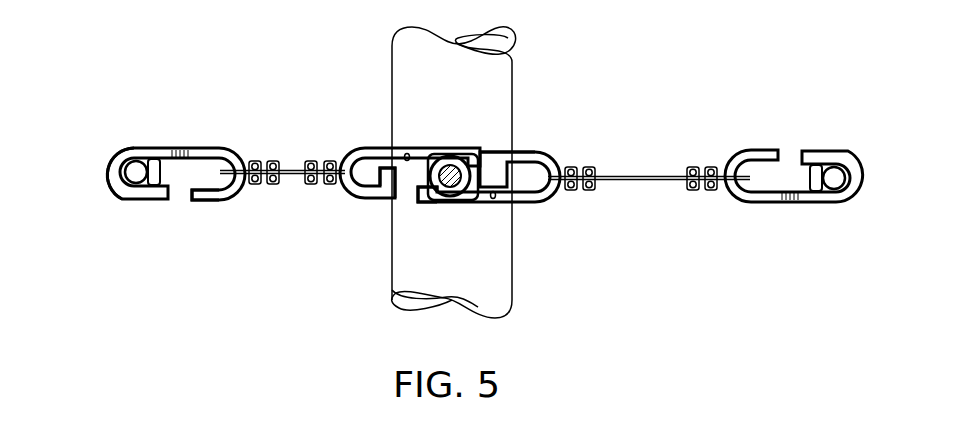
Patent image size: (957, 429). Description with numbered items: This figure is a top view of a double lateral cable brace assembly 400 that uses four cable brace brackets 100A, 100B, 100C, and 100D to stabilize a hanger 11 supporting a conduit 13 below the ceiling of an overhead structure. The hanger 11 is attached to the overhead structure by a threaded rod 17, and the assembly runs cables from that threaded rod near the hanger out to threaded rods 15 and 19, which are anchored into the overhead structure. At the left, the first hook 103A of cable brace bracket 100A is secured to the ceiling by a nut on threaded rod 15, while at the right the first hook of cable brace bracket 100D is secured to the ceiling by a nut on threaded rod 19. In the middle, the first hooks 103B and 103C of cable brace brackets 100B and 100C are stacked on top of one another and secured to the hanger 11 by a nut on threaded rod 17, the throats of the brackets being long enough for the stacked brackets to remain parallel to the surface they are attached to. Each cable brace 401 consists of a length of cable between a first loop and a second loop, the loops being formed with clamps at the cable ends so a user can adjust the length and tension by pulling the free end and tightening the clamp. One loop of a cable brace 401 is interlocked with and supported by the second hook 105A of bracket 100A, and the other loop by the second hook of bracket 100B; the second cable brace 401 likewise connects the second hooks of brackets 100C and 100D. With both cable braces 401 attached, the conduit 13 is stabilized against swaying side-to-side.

The double lateral cable brace assembly 400 is at (125, 126).
The conduit 13 is at (471, 104).
The hanger 11 is at (497, 162).
The threaded rod 15 is at (134, 178).
The threaded rod 17 is at (443, 158).
The threaded rod 19 is at (830, 166).
The cable brace bracket 100A is at (150, 245).
The cable brace bracket 100B is at (407, 229).
The cable brace bracket 100C is at (499, 196).
The cable brace bracket 100D is at (794, 182).
The first hook 103A is at (102, 217).
The first hook 103B is at (430, 216).
The first hook 103C is at (461, 238).
The second hook 105A is at (205, 217).
The cable brace 401 is at (290, 183).